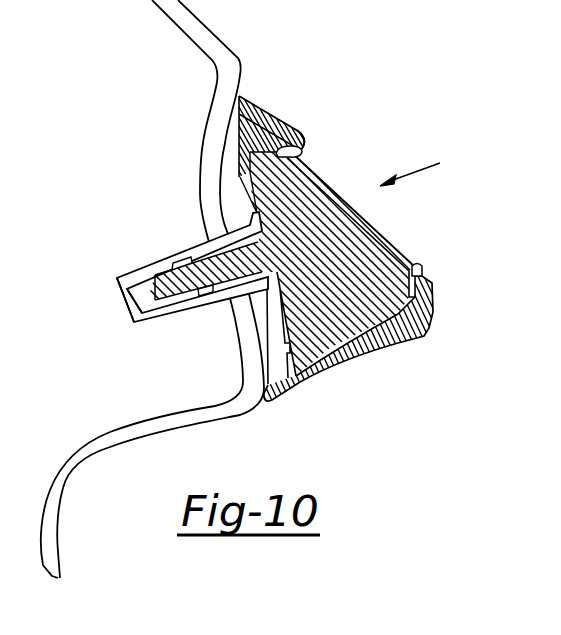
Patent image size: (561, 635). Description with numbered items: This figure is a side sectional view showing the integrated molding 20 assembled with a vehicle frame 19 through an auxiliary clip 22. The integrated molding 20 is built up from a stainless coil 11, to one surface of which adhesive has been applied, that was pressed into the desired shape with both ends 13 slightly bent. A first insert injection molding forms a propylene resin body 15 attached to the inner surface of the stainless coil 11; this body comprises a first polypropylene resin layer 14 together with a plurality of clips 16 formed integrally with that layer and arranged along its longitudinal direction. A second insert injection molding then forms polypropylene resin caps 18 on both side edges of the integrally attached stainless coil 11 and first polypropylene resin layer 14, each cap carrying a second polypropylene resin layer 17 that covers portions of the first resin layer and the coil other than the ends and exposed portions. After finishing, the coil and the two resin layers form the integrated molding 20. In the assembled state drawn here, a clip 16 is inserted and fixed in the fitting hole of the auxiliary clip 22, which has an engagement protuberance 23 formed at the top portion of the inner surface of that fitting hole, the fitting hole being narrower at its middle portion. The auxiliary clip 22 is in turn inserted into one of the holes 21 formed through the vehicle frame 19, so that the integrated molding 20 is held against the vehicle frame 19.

The stainless coil 11 is at (380, 237).
The ends of the stainless coil 13 is at (300, 153).
The first polypropylene resin layer 14 is at (255, 190).
The propylene resin body 15 is at (292, 313).
The clip 16 is at (165, 300).
The second polypropylene resin layer 17 is at (267, 115).
The polypropylene resin cap 18 is at (300, 133).
The vehicle frame 19 is at (224, 58).
The integrated molding 20 is at (424, 168).
The hole 21 is at (220, 232).
The auxiliary clip 22 is at (130, 277).
The engagement protuberance 23 is at (178, 260).